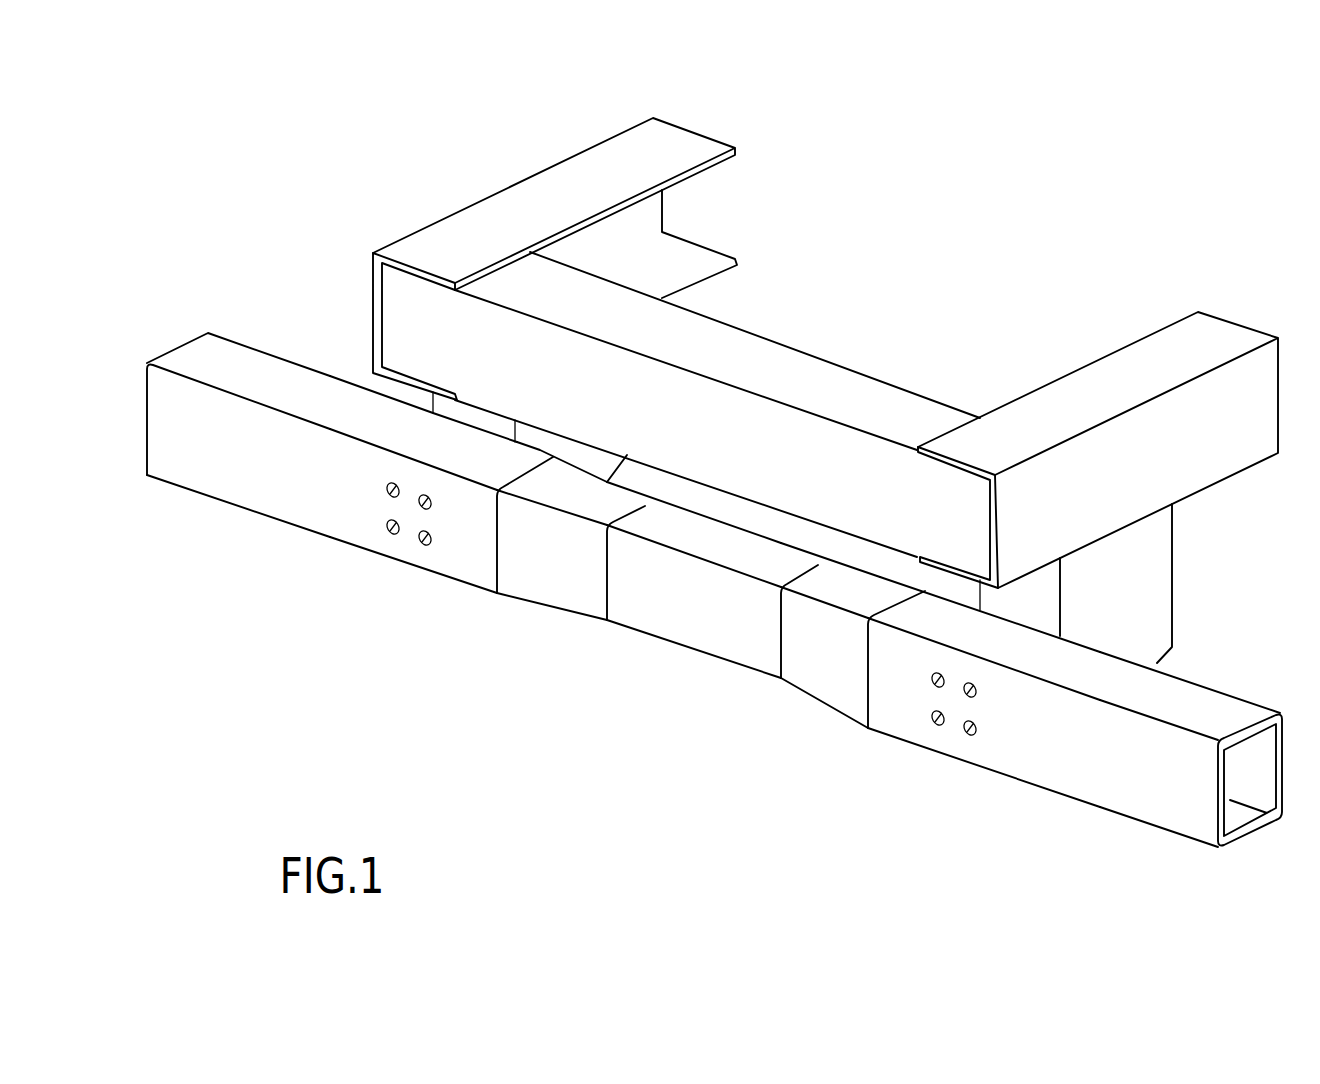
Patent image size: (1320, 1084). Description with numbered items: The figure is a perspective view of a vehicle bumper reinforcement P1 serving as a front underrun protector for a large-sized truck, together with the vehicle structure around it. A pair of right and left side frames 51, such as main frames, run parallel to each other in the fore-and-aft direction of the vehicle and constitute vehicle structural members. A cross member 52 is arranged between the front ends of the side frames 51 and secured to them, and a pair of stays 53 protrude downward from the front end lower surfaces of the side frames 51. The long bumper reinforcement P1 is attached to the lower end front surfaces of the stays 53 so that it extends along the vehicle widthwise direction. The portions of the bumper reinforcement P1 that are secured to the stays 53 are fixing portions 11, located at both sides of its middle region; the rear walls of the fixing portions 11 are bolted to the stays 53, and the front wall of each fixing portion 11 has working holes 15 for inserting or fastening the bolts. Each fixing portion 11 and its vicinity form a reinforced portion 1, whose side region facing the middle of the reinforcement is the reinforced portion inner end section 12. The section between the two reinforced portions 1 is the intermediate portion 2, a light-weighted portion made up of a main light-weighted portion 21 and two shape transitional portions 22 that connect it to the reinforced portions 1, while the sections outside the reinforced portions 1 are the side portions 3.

The reinforced portion 1 is at (709, 641).
The fixing portion 11 is at (397, 547).
The reinforced portion inner end section 12 is at (868, 700).
The working hole 15 is at (383, 492).
The intermediate portion 2 is at (688, 637).
The main light-weighted portion 21 is at (688, 615).
The shape transitional portion 22 is at (563, 578).
The side portion 3 is at (263, 377).
The side frame 51 is at (545, 192).
The cross member 52 is at (768, 363).
The stay 53 is at (1142, 577).
The bumper reinforcement P1 is at (210, 574).